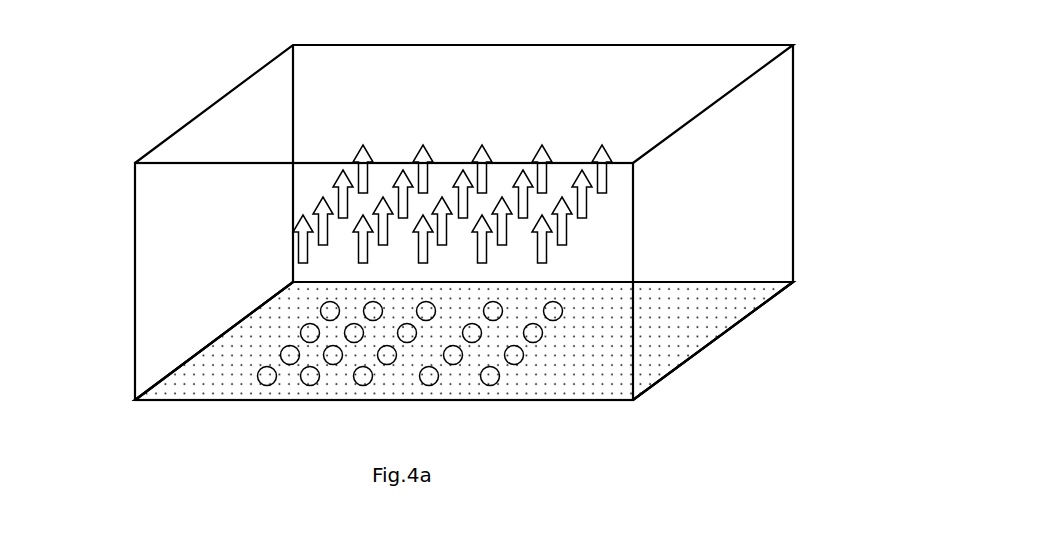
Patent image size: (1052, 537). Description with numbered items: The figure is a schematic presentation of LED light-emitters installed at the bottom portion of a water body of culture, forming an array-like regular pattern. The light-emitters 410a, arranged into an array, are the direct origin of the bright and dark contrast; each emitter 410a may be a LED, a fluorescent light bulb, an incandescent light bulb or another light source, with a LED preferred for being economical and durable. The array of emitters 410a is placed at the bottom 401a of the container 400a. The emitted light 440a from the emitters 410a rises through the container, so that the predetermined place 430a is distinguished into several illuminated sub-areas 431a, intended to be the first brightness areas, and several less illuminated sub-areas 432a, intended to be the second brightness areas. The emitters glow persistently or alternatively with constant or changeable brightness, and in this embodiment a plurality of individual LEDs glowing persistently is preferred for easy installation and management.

The container 400a is at (273, 62).
The bottom 401a is at (195, 380).
The light-emitter 410a is at (262, 382).
The predetermined place 430a is at (464, 341).
The illuminated sub-area 431a is at (555, 302).
The less illuminated sub-area 432a is at (522, 313).
The emitted light 440a is at (587, 205).